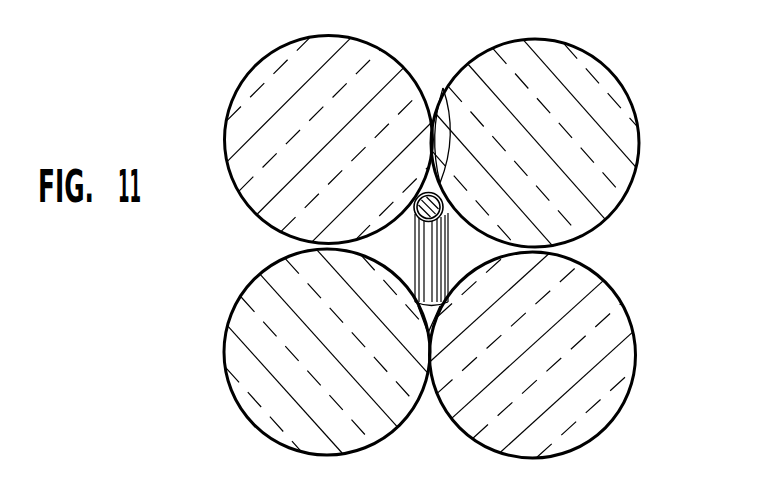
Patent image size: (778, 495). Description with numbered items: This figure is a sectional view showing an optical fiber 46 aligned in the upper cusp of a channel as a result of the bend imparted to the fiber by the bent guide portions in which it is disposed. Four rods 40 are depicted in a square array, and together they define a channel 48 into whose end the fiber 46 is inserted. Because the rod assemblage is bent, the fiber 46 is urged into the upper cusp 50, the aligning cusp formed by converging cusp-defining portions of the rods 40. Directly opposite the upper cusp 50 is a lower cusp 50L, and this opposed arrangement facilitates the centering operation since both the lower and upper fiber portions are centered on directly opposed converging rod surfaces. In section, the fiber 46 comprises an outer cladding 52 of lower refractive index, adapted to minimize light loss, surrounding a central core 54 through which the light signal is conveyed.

The rods 40 is at (590, 276).
The fiber 46 is at (418, 244).
The channel 48 is at (467, 259).
The upper cusp 50 is at (443, 88).
The lower cusp 50L is at (432, 313).
The outer cladding 52 is at (436, 194).
The central core 54 is at (448, 200).